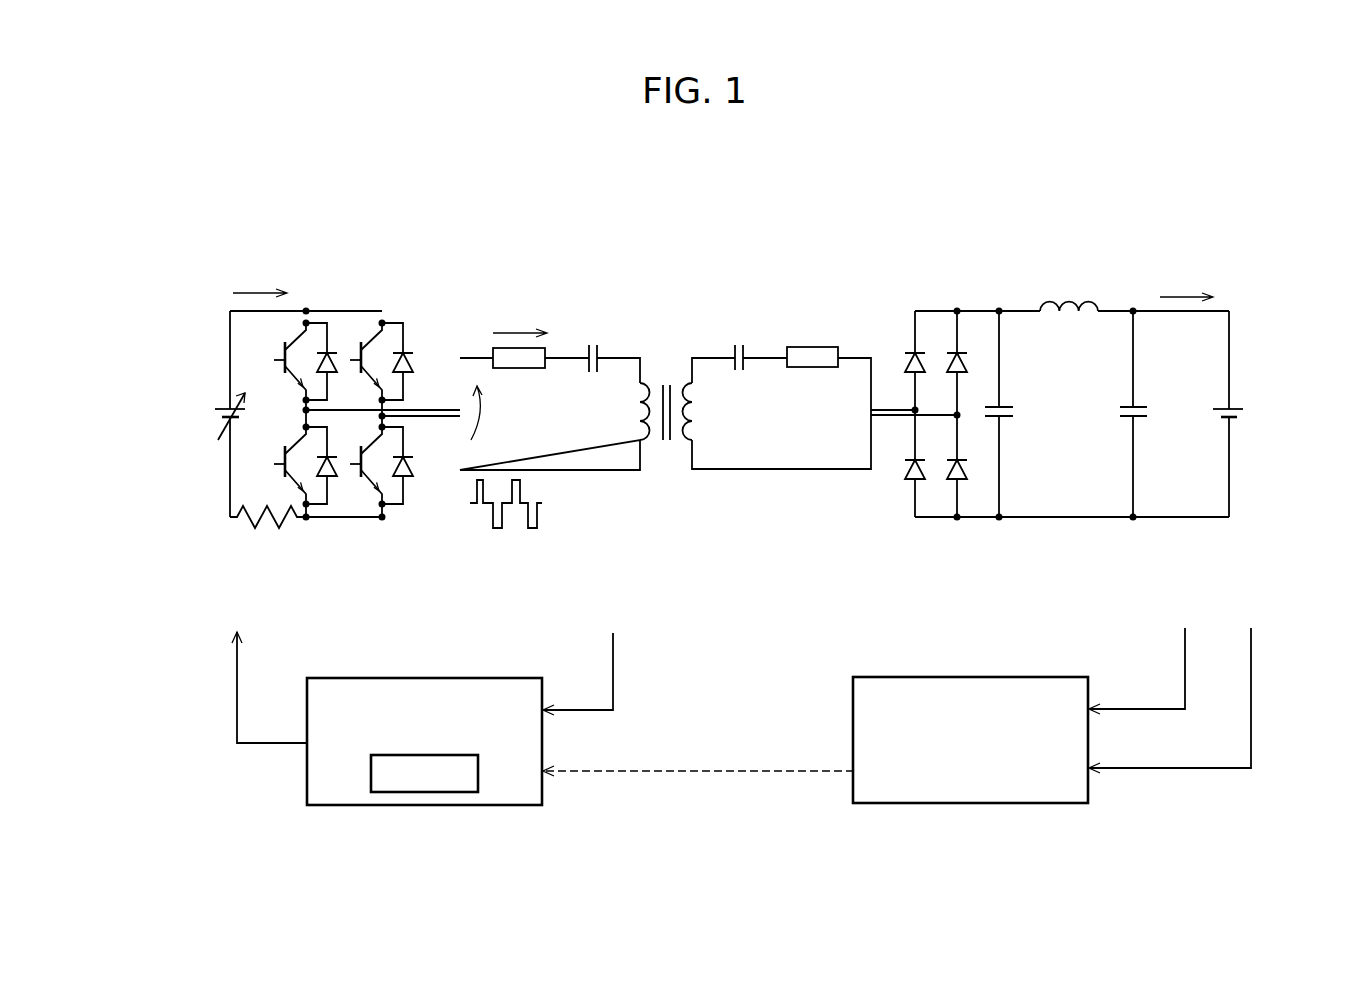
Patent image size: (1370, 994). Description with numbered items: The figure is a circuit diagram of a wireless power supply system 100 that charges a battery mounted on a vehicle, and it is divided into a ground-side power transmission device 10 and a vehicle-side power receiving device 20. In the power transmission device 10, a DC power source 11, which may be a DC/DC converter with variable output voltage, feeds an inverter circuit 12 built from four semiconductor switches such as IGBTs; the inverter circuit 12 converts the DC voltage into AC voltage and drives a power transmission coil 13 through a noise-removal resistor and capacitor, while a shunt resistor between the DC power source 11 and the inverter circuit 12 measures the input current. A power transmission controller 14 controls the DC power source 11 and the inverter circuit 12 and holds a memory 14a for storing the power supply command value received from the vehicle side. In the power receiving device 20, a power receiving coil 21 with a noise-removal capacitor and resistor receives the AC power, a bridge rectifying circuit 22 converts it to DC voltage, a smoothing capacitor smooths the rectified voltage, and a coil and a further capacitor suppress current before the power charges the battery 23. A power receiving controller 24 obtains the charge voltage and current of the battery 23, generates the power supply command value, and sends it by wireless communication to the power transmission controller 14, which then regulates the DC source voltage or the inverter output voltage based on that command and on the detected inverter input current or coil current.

The wireless power supply system 100 is at (903, 205).
The power transmission device 10 is at (647, 547).
The DC power source 11 is at (221, 407).
The inverter circuit 12 is at (400, 300).
The power transmission coil 13 is at (645, 383).
The power transmission controller 14 is at (450, 678).
The memory 14a is at (428, 792).
The power receiving device 20 is at (1293, 547).
The power receiving coil 21 is at (689, 383).
The bridge rectifying circuit 22 is at (968, 298).
The battery 23 is at (1238, 406).
The power receiving controller 24 is at (997, 677).